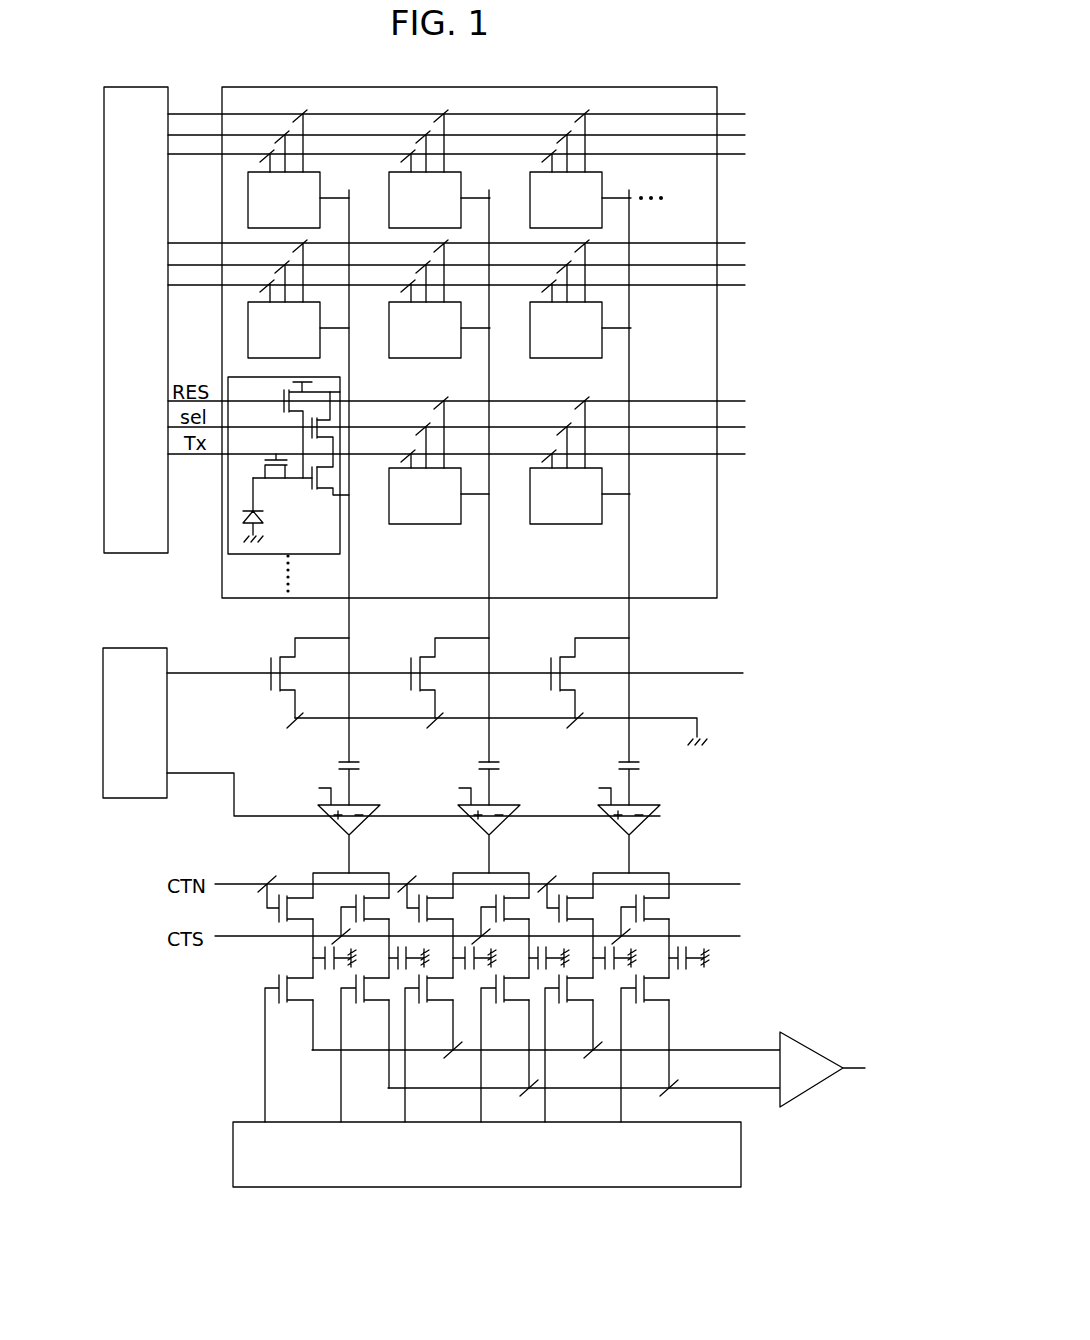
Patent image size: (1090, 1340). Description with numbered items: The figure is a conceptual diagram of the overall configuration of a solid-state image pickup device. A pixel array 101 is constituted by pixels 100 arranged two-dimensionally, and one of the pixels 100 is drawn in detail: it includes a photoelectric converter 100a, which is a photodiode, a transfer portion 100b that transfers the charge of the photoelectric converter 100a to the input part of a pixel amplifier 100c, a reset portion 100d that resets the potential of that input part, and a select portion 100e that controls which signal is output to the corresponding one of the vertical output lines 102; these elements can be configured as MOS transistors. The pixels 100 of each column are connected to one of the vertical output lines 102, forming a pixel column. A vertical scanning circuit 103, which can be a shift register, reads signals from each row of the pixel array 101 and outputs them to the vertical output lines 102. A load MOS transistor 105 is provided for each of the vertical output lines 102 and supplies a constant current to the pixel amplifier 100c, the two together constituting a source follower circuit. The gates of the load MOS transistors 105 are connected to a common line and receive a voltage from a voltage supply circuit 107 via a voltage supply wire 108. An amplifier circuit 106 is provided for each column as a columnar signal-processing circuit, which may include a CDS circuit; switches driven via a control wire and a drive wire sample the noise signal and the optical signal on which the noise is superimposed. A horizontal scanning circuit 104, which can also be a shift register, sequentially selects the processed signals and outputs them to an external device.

The pixel 100 is at (289, 493).
The photoelectric converter 100a is at (267, 523).
The transfer portion 100b is at (275, 473).
The pixel amplifier 100c is at (312, 492).
The reset portion 100d is at (298, 398).
The select portion 100e is at (328, 423).
The pixel array 101 is at (690, 87).
The vertical output line 102 is at (630, 612).
The vertical scanning circuit 103 is at (104, 148).
The horizontal scanning circuit 104 is at (660, 1187).
The load MOS transistor 105 is at (272, 656).
The amplifier circuit 106 is at (660, 810).
The voltage supply circuit 107 is at (103, 705).
The voltage supply wire 108 is at (198, 675).